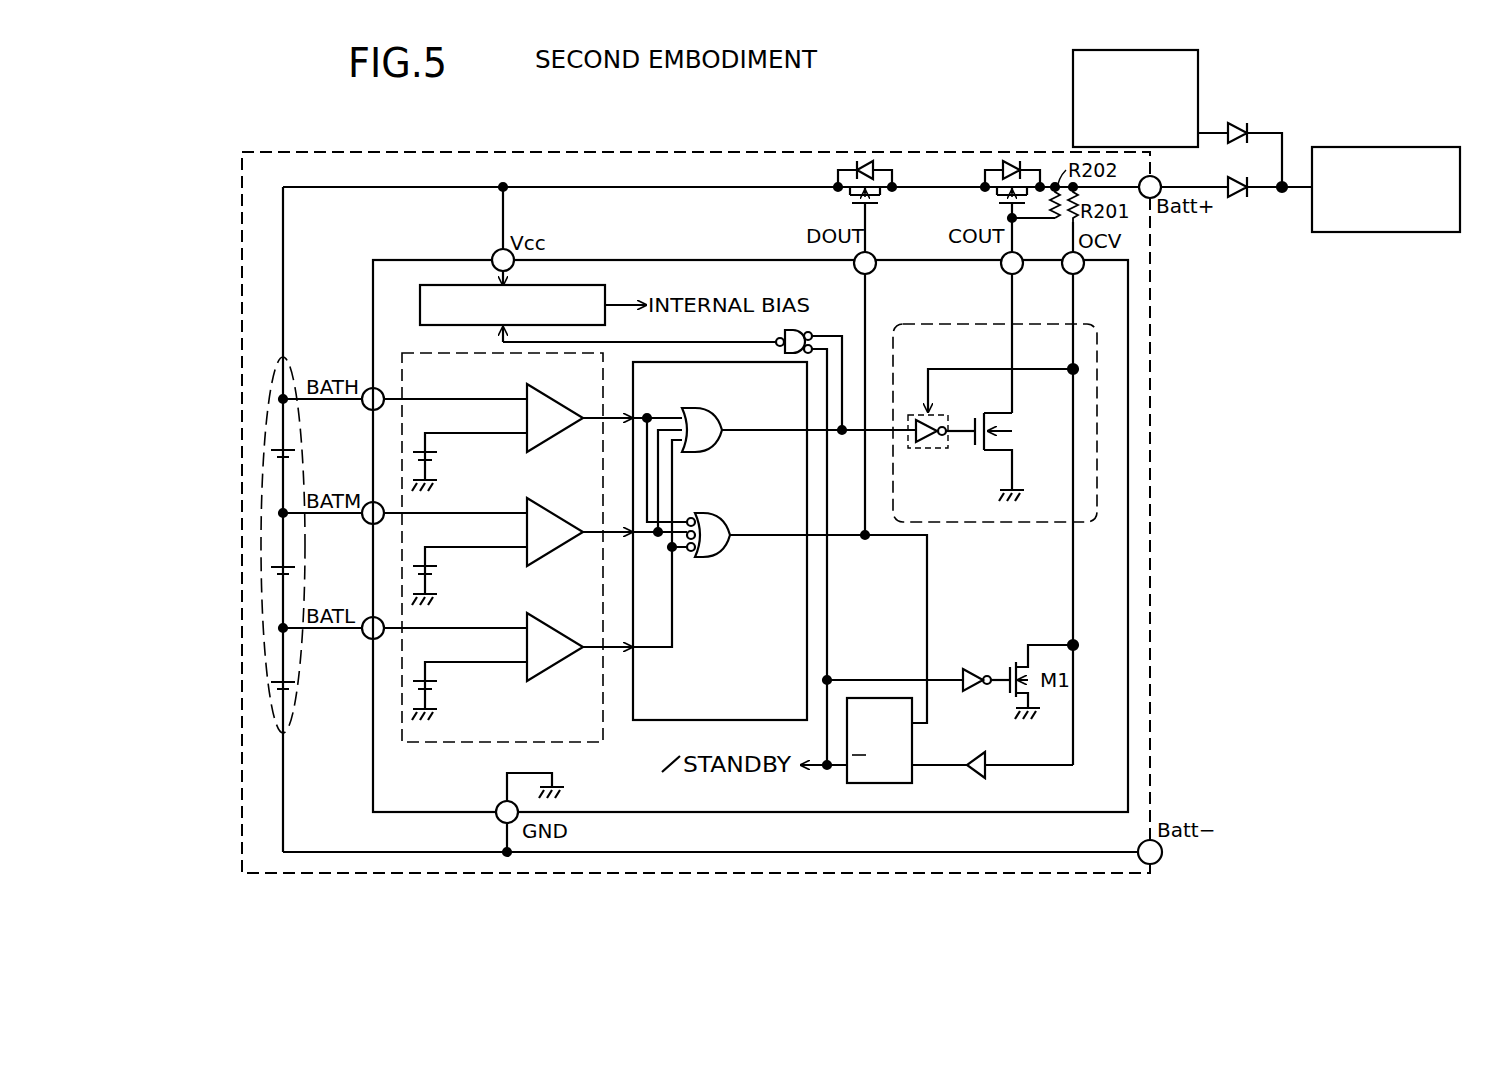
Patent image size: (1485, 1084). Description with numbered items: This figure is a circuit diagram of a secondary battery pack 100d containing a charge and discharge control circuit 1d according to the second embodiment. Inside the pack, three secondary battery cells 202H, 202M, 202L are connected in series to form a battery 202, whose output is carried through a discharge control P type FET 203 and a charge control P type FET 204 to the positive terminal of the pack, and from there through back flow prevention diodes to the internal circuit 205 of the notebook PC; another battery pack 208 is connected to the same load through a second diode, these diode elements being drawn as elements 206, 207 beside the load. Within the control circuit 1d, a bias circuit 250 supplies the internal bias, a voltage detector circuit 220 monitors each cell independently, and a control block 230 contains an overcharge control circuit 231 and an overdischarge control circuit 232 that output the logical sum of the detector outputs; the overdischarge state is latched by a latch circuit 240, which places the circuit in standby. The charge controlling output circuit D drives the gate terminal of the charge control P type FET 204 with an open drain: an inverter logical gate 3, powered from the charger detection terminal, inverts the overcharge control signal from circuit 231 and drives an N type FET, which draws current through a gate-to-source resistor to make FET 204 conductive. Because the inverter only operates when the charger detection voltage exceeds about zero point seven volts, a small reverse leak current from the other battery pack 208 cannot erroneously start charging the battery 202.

The battery pack 100d is at (426, 146).
The battery 202 is at (272, 400).
The secondary battery cell 202H is at (272, 455).
The secondary battery cell 202M is at (272, 572).
The secondary battery cell 202L is at (272, 687).
The discharge control P type FET 203 is at (862, 162).
The charge control P type FET 204 is at (1000, 162).
The internal circuit of notebook PC 205 is at (1362, 148).
The diode D2 206 is at (1239, 198).
The diode D1 207 is at (1250, 126).
The other battery pack 208 is at (1073, 75).
The charge and discharge control circuit 1d is at (1138, 352).
The bias circuit 250 is at (600, 295).
The voltage detector circuit 220 is at (545, 742).
The control circuit 230 is at (755, 604).
The overcharge control circuit 231 is at (700, 416).
The overdischarge control circuit 232 is at (702, 521).
The latch circuit 240 is at (912, 783).
The inverter logical gate 3 is at (922, 448).
The charge controlling output circuit D is at (1041, 423).